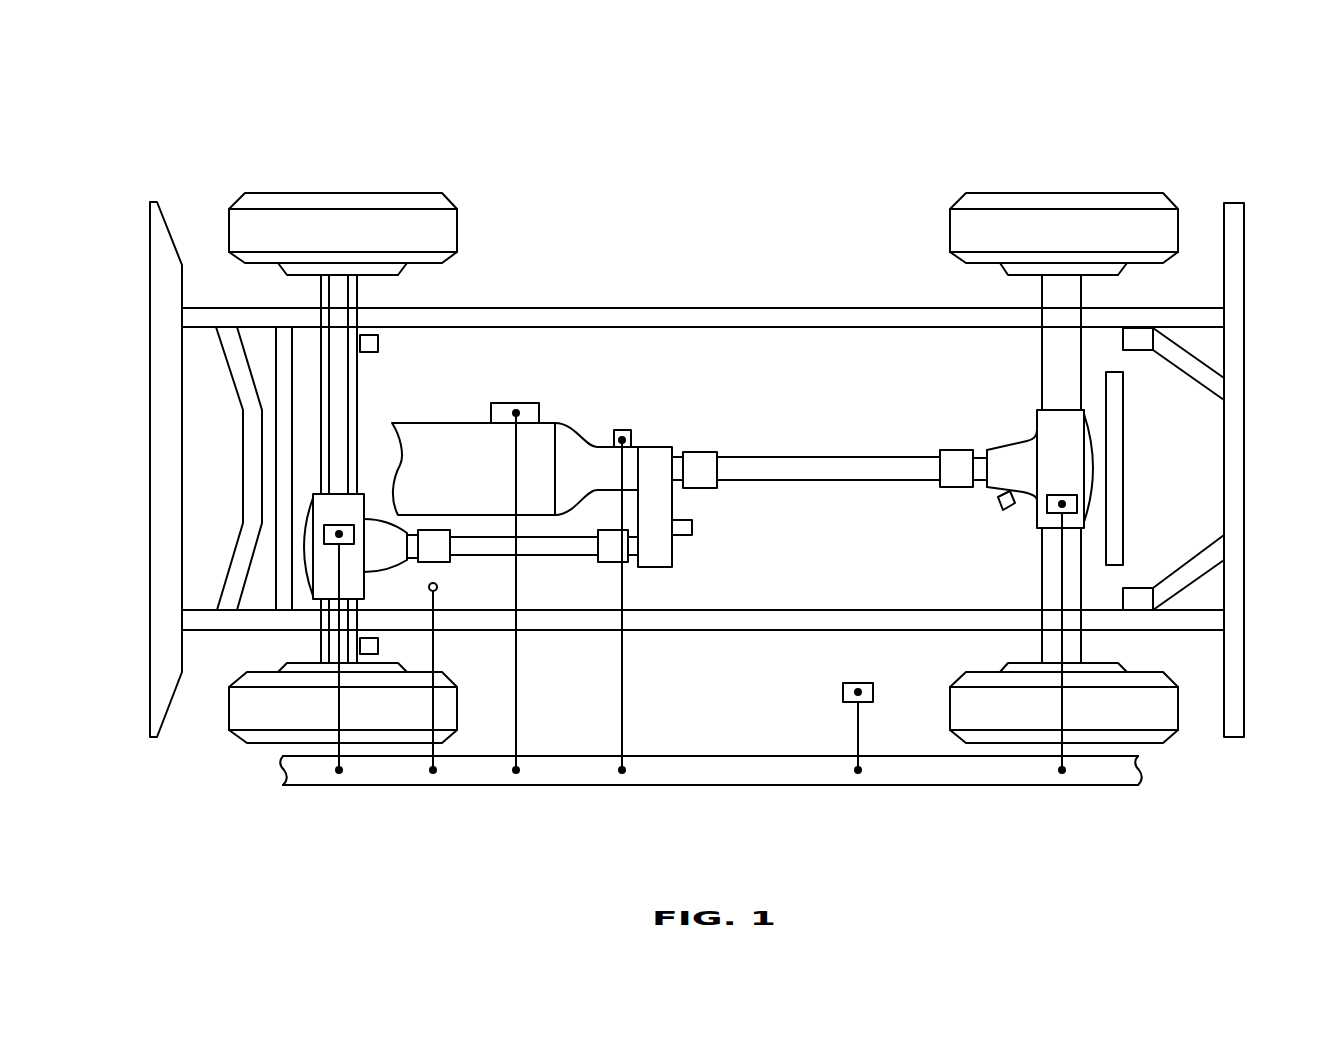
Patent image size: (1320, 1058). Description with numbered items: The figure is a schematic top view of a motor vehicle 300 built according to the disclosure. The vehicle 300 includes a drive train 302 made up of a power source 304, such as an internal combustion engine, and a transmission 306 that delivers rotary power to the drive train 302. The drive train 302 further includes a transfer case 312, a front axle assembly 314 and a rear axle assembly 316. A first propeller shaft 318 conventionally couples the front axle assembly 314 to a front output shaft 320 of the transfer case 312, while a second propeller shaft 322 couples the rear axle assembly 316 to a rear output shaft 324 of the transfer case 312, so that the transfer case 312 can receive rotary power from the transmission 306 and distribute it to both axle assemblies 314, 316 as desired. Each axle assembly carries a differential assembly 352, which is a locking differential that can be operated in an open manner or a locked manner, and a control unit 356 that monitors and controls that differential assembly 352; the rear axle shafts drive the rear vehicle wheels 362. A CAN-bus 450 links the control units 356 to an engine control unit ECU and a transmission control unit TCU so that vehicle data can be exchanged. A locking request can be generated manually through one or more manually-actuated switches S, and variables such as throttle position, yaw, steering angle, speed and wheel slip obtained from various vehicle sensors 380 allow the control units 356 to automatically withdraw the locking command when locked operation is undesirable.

The motor vehicle 300 is at (870, 122).
The drive train 302 is at (646, 406).
The power source 304 is at (432, 423).
The transmission 306 is at (572, 438).
The transfer case 312 is at (660, 458).
The front axle assembly 314 is at (325, 500).
The rear axle assembly 316 is at (1025, 378).
The first propeller shaft 318 is at (537, 557).
The front output shaft 320 is at (634, 553).
The second propeller shaft 322 is at (865, 472).
The rear output shaft 324 is at (680, 452).
The differential assembly 352 is at (330, 555).
The control unit 356 is at (327, 527).
The rear vehicle wheels 362 is at (1147, 220).
The vehicle sensors 380 is at (858, 682).
The CAN-bus 450 is at (1102, 773).
The engine control unit ECU is at (534, 403).
The transmission control unit TCU is at (619, 430).
The manually-actuated switches S is at (437, 584).